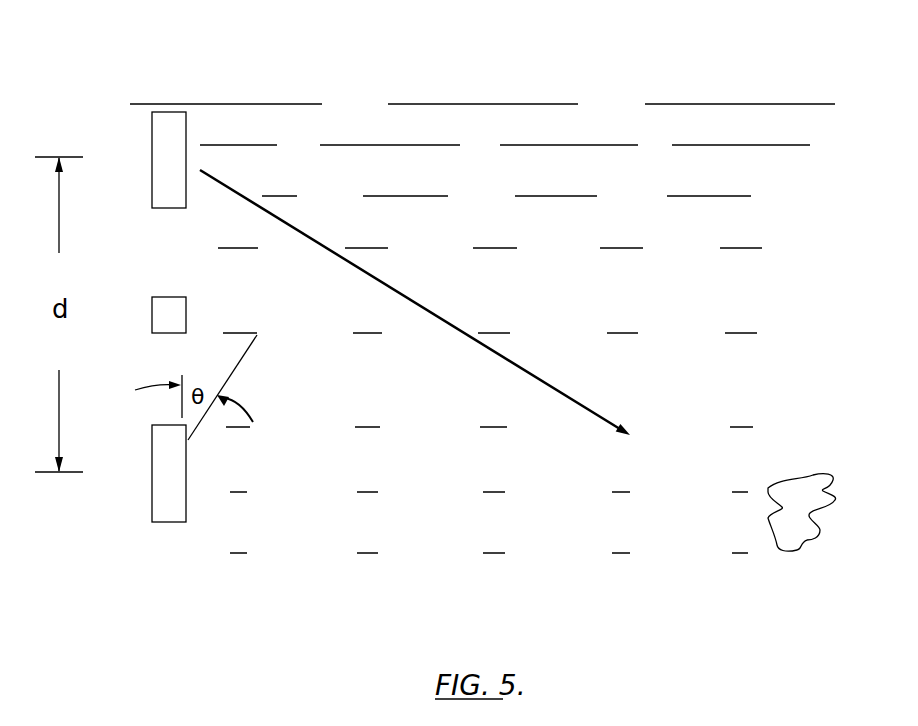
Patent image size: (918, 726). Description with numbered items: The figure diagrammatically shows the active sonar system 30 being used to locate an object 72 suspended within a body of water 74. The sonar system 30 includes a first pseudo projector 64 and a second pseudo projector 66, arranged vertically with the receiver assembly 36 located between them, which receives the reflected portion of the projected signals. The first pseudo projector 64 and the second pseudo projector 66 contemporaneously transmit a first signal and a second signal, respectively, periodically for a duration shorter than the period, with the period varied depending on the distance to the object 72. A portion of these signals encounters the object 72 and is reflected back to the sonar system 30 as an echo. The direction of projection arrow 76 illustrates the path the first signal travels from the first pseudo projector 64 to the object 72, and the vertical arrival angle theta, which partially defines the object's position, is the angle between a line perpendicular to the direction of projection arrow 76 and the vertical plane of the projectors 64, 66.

The active sonar system 30 is at (291, 70).
The receiver assembly 36 is at (172, 297).
The first pseudo projector 64 is at (150, 157).
The second pseudo projector 66 is at (150, 503).
The object 72 is at (802, 552).
The body of water 74 is at (713, 103).
The direction of projection arrow 76 is at (433, 314).